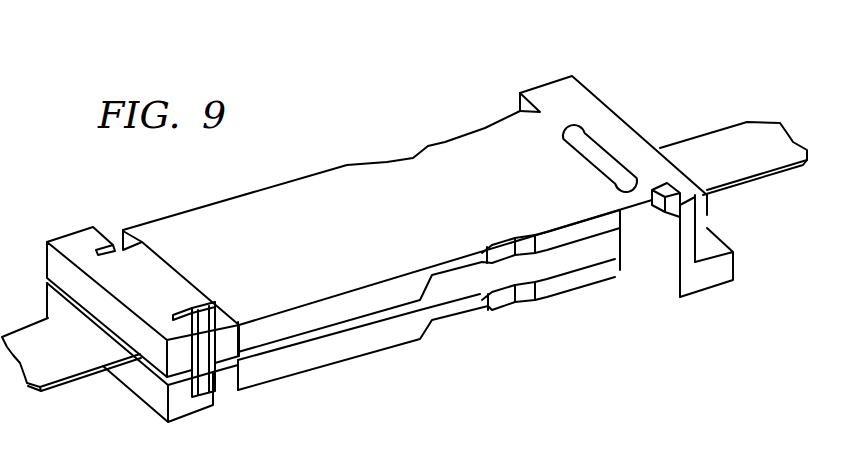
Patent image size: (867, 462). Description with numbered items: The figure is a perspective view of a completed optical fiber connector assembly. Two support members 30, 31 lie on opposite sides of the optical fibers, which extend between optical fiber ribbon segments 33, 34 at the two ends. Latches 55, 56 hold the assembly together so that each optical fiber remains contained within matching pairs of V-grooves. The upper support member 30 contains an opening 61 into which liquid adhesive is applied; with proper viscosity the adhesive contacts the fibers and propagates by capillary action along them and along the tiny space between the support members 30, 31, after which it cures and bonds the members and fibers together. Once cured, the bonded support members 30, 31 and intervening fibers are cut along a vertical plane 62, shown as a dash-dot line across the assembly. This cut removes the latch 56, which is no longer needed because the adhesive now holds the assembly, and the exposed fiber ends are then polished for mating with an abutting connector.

The upper support member 30 is at (353, 296).
The support member 31 is at (363, 342).
The optical fiber ribbon segment 33 is at (23, 336).
The optical fiber ribbon segment 34 is at (717, 135).
The latch 55 is at (212, 343).
The latch 56 is at (687, 247).
The opening 61 is at (577, 140).
The vertical plane 62 is at (593, 222).